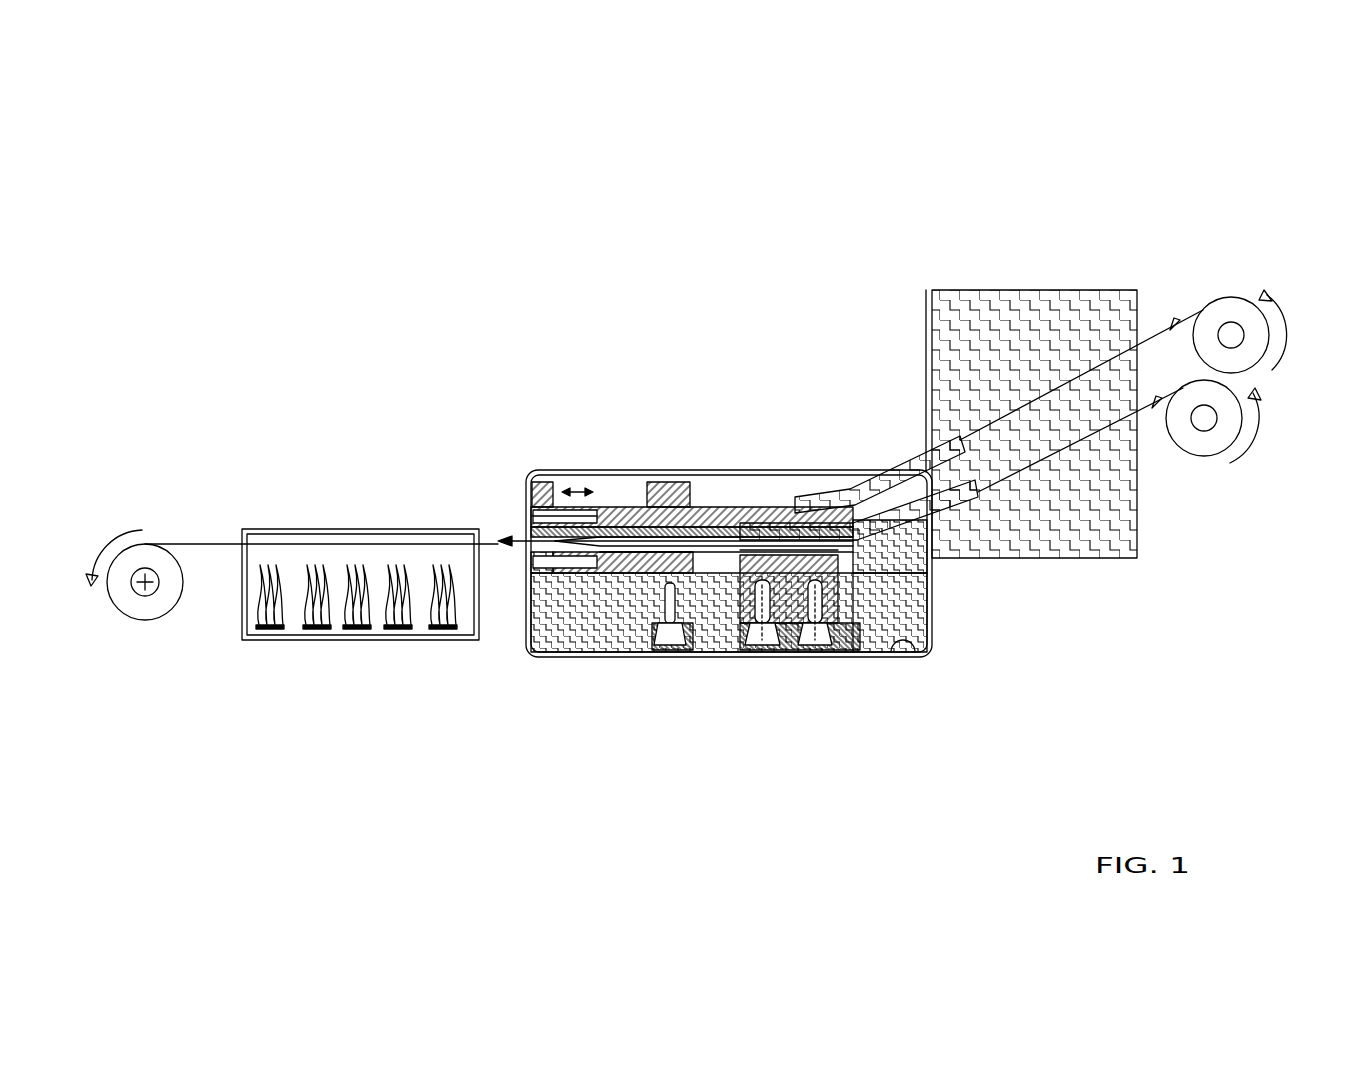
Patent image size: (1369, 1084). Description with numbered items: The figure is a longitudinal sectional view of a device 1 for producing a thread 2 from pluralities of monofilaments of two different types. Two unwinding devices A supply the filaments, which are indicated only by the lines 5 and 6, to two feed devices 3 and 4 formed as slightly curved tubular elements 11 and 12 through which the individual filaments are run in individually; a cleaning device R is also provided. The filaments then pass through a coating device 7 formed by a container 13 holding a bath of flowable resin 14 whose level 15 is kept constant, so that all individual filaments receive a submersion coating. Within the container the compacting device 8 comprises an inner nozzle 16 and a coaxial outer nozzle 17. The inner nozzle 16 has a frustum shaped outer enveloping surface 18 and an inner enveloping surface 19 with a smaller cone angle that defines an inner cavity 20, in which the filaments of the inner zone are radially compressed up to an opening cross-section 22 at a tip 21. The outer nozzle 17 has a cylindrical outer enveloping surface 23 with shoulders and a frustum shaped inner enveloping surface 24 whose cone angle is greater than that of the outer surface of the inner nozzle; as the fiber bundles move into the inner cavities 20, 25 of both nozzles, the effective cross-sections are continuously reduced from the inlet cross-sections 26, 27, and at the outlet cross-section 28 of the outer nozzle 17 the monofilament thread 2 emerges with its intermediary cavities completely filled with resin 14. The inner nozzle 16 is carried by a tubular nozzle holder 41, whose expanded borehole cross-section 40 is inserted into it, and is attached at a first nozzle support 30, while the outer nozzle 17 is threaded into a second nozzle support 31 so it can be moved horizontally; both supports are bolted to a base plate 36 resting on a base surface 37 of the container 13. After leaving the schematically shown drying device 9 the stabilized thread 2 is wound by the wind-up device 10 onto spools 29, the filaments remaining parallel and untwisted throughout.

The device 1 is at (767, 292).
The thread 2 is at (490, 540).
The feed device 3 is at (909, 443).
The feed device 4 is at (951, 483).
The lines indicating monofilaments 5 is at (1005, 418).
The lines indicating monofilaments 6 is at (1057, 457).
The coating device 7 is at (942, 589).
The compacting device 8 is at (632, 480).
The drying device 9 is at (352, 657).
The wind-up device 10 is at (148, 638).
The tubular element 11 is at (835, 490).
The tubular element 12 is at (973, 482).
The container 13 is at (930, 615).
The resin 14 is at (915, 630).
The level 15 is at (723, 530).
The inner nozzle 16 is at (659, 568).
The outer nozzle 17 is at (608, 572).
The outer enveloping surface 18 is at (616, 522).
The inner enveloping surface 19 is at (683, 540).
The inner cavity 20 is at (722, 547).
The tip 21 is at (540, 560).
The opening cross-section 22 is at (555, 541).
The outer enveloping surface 23 is at (626, 567).
The upper jaw element 24 is at (656, 525).
The inner cavity 25 is at (675, 523).
The inlet cross-section 26 is at (705, 527).
The inlet cross-section 27 is at (735, 547).
The outlet cross-section 28 is at (555, 541).
The spool 29 is at (150, 540).
The first nozzle support 30 is at (795, 600).
The second nozzle support 31 is at (687, 608).
The base plate 36 is at (757, 610).
The base surface 37 is at (917, 610).
The borehole cross-section 40 is at (748, 527).
The nozzle holder 41 is at (782, 510).
The cleaning device R is at (1087, 468).
The unwinding device A is at (1235, 340).